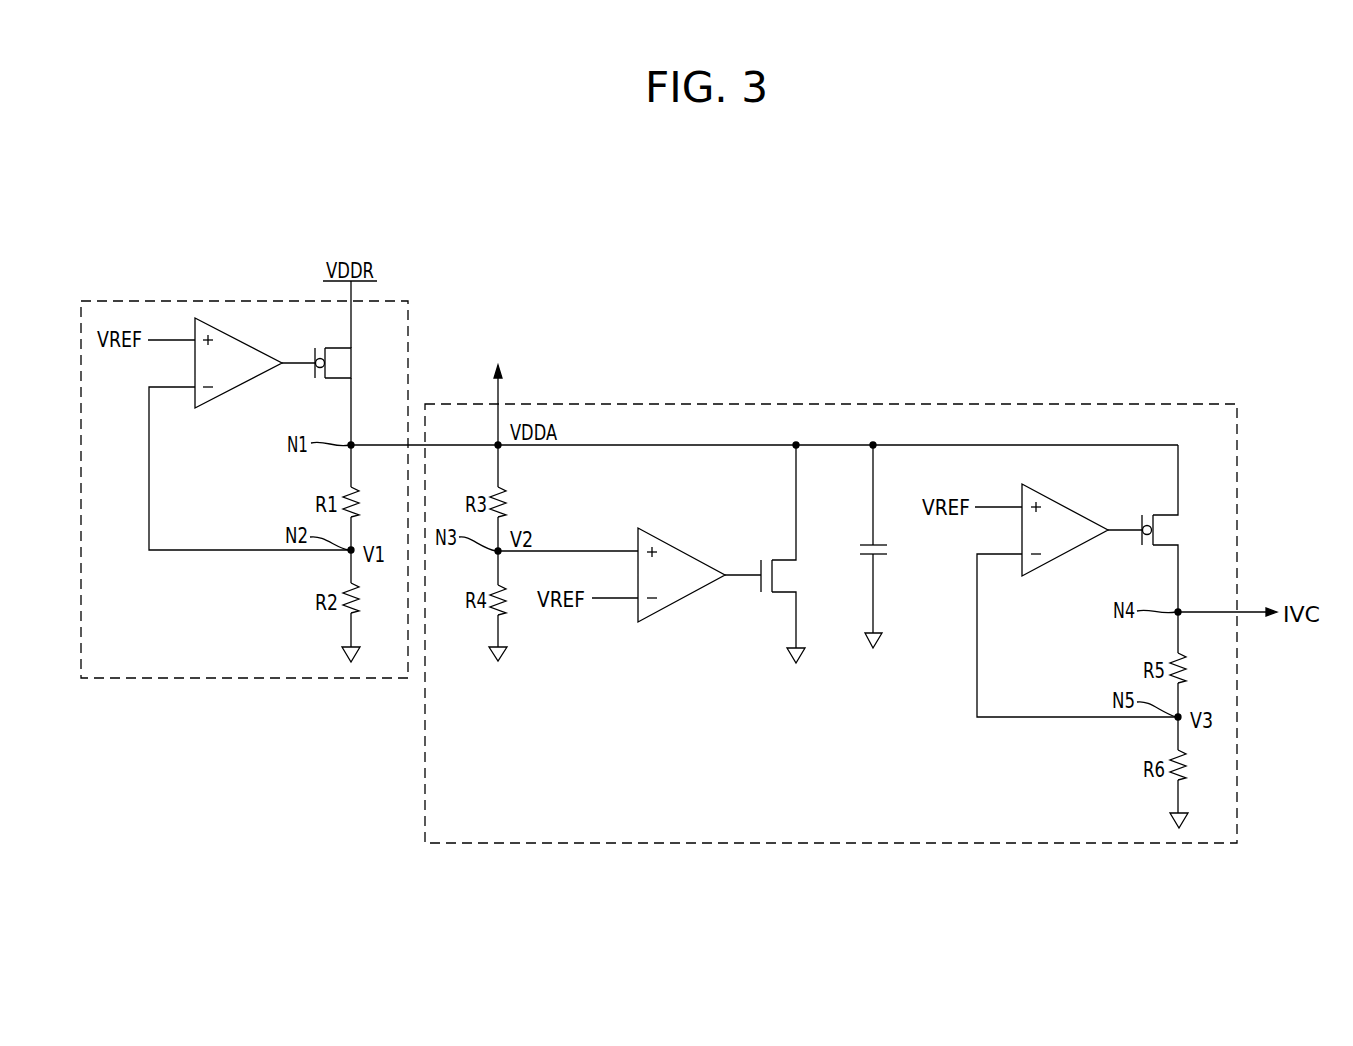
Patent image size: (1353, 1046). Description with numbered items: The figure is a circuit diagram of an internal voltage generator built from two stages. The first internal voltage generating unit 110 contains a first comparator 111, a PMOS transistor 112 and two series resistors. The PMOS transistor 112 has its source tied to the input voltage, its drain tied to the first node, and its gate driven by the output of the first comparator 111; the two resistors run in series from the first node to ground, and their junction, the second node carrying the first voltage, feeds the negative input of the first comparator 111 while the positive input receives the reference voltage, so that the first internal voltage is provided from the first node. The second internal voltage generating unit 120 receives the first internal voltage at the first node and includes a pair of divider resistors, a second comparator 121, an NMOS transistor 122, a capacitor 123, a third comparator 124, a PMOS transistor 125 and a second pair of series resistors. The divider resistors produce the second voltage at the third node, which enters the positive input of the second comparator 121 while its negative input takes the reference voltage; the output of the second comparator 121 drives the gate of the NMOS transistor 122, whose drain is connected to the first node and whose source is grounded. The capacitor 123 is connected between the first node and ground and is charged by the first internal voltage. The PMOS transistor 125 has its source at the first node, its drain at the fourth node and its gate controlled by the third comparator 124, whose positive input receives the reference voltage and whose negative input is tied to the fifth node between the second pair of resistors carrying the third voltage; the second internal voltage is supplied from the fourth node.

The first internal voltage generating unit 110 is at (175, 301).
The first comparator 111 is at (213, 398).
The PMOS transistor 112 is at (340, 364).
The second internal voltage generating unit 120 is at (1135, 404).
The second comparator 121 is at (682, 600).
The NMOS transistor 122 is at (785, 577).
The capacitor 123 is at (888, 553).
The third comparator 124 is at (1042, 567).
The PMOS transistor 125 is at (1166, 531).